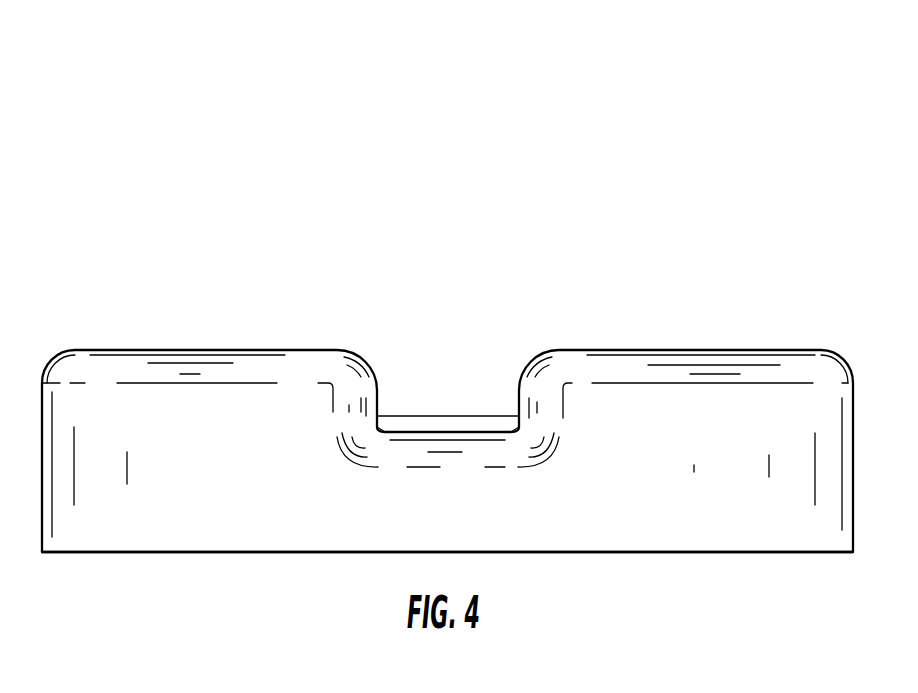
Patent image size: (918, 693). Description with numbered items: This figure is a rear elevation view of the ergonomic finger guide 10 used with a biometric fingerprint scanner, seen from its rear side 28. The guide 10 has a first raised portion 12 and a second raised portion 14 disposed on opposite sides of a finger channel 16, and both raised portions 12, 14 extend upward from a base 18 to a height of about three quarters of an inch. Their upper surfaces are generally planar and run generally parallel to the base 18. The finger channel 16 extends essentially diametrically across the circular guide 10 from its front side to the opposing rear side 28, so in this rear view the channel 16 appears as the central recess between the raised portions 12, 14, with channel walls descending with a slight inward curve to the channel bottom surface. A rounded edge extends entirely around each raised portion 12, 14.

The finger guide 10 is at (212, 140).
The first raised portion 12 is at (722, 348).
The second raised portion 14 is at (108, 349).
The finger channel 16 is at (453, 368).
The base 18 is at (705, 553).
The rear side 28 is at (458, 521).